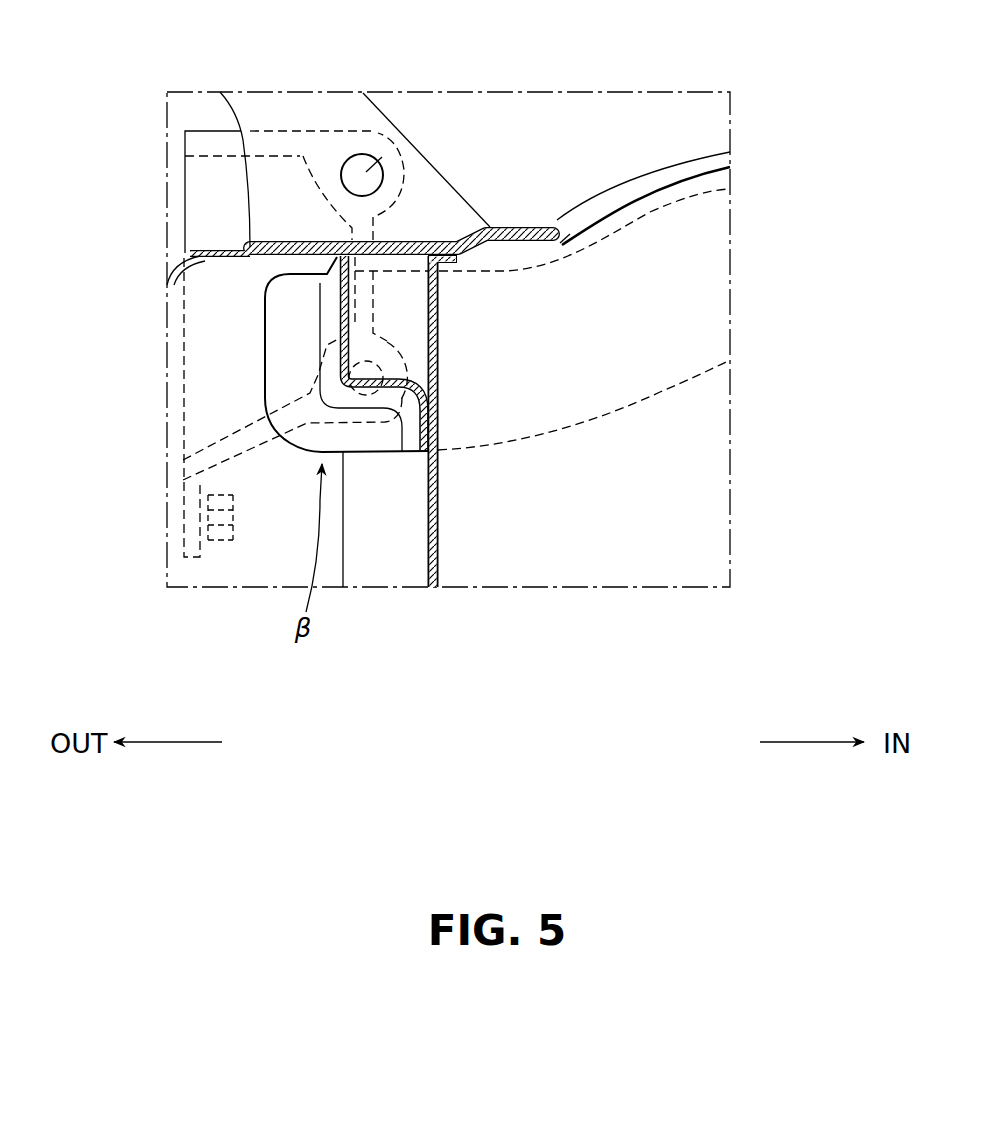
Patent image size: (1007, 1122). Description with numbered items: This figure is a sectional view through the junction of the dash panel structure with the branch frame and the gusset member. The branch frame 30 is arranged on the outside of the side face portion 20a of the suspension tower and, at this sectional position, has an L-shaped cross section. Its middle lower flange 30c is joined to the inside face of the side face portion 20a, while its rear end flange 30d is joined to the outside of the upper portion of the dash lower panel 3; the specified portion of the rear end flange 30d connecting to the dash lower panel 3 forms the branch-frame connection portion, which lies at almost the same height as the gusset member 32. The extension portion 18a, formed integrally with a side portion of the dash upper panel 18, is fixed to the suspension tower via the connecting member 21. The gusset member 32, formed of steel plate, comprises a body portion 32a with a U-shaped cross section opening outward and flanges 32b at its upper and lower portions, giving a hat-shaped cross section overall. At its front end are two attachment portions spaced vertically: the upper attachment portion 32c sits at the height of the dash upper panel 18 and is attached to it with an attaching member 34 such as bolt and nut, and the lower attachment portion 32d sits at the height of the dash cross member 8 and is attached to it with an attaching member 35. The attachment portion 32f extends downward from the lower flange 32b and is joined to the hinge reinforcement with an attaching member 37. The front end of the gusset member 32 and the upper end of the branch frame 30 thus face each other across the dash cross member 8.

The dash lower panel 3 is at (710, 516).
The dash cross member 8 is at (655, 370).
The dash upper panel 18 is at (624, 126).
The extension portion 18a is at (527, 228).
The side face portion 20a is at (438, 560).
The connecting member 21 is at (510, 240).
The branch frame 30 is at (294, 368).
The middle lower flange 30c is at (410, 444).
The rear end flange 30d is at (285, 320).
The gusset member 32 is at (408, 177).
The body portion 32a is at (283, 187).
The flanges 32b is at (265, 145).
The upper attachment portion 32c is at (378, 133).
The lower attachment portion 32d is at (387, 342).
The attachment portion 32f is at (195, 560).
The attaching member 34 is at (378, 133).
The attaching member 35 is at (373, 364).
The attaching member 37 is at (225, 543).